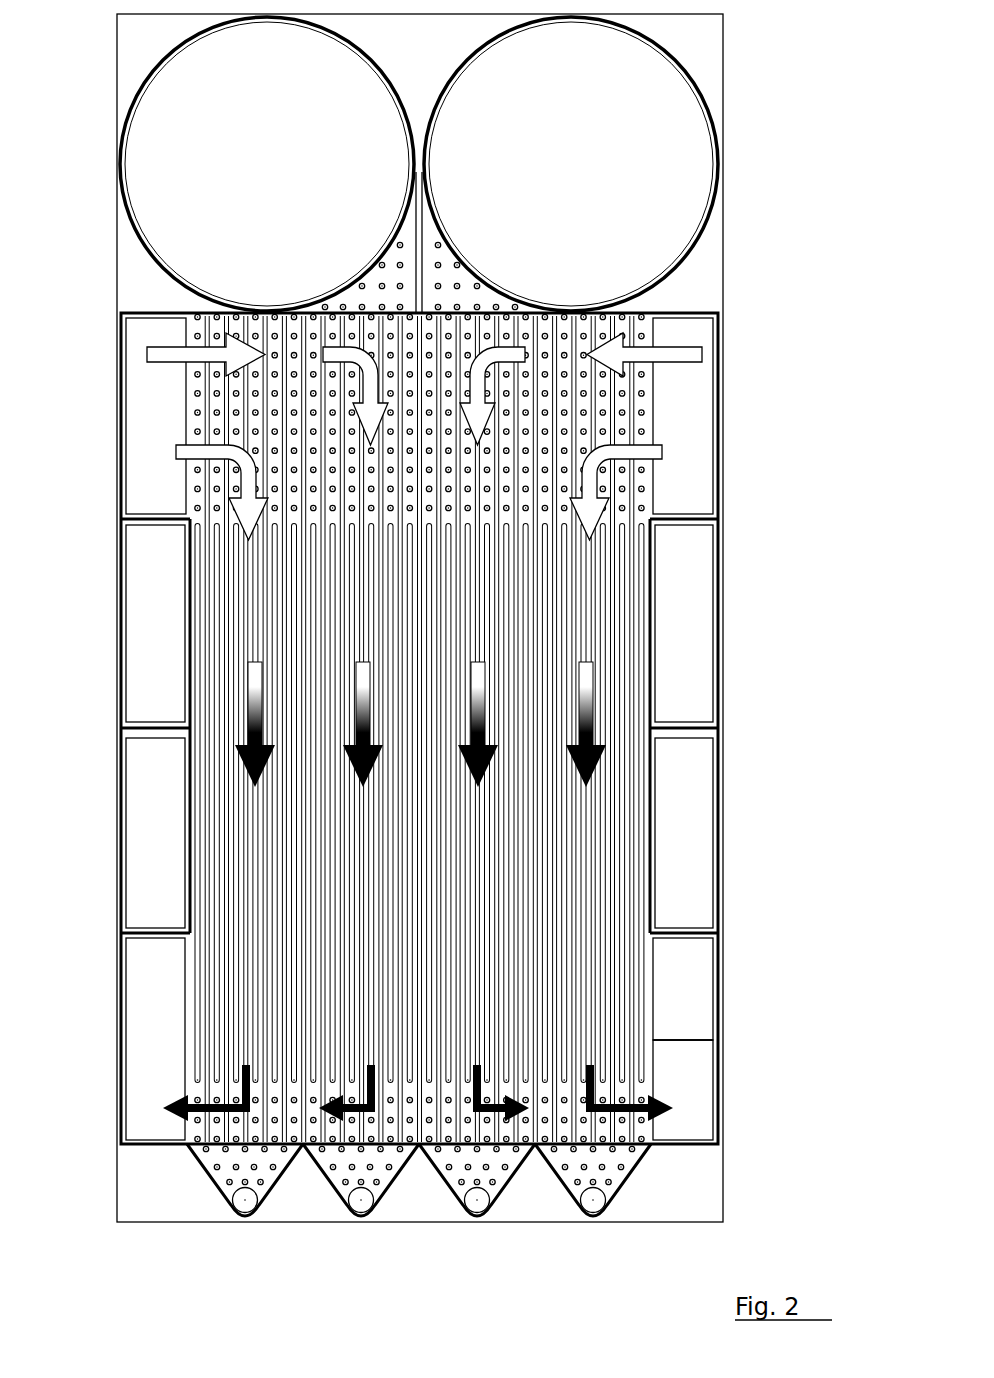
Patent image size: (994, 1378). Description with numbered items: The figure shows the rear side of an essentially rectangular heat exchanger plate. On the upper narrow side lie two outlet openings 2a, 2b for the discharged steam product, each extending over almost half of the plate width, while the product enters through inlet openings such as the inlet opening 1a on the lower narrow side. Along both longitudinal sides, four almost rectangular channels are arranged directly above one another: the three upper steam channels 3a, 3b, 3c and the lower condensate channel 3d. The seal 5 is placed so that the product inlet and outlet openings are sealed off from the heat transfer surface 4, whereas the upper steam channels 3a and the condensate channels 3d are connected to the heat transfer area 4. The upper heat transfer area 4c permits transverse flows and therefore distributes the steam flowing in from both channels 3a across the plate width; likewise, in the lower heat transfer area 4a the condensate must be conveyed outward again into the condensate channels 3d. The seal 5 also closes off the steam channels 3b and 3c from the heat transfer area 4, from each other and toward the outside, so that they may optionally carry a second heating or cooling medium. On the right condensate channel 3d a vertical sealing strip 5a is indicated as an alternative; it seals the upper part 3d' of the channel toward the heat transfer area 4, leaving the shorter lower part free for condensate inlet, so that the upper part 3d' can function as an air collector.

The inlet opening 1a is at (257, 1197).
The outlet opening 2a is at (248, 163).
The outlet opening 2b is at (608, 144).
The upper steam channel 3a is at (150, 428).
The steam channel 3b is at (687, 595).
The steam channel 3c is at (702, 820).
The condensate channel 3d is at (442, 1039).
The upper part of the condensate channel 3d' is at (738, 989).
The heat transfer surface 4 is at (610, 557).
The lower heat transfer area 4a is at (543, 1107).
The upper heat transfer area 4c is at (593, 410).
The seal 5 is at (688, 303).
The vertical sealing strip 5a is at (655, 1040).